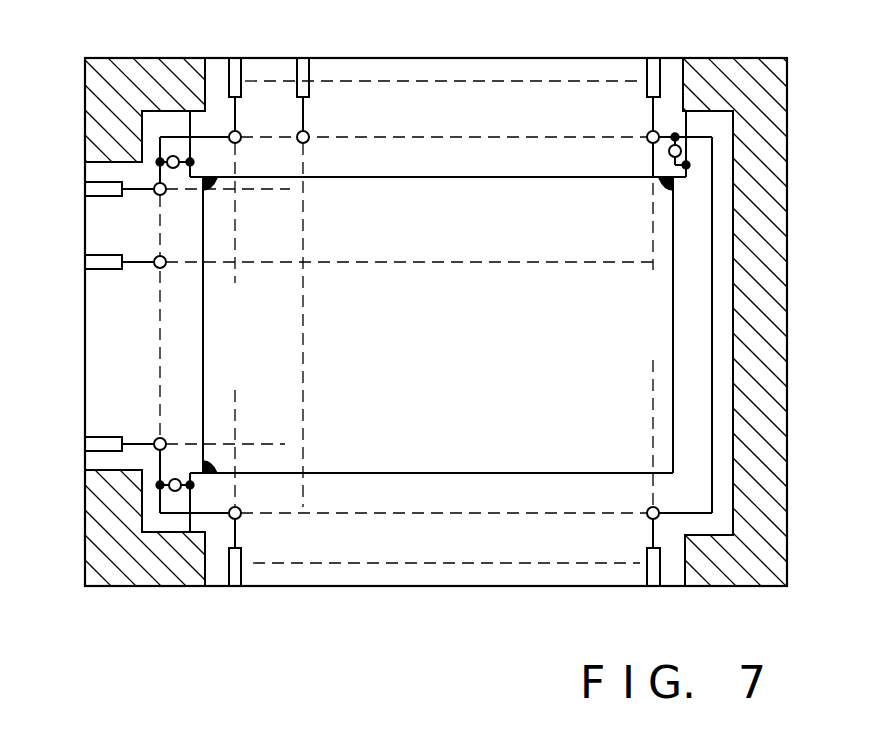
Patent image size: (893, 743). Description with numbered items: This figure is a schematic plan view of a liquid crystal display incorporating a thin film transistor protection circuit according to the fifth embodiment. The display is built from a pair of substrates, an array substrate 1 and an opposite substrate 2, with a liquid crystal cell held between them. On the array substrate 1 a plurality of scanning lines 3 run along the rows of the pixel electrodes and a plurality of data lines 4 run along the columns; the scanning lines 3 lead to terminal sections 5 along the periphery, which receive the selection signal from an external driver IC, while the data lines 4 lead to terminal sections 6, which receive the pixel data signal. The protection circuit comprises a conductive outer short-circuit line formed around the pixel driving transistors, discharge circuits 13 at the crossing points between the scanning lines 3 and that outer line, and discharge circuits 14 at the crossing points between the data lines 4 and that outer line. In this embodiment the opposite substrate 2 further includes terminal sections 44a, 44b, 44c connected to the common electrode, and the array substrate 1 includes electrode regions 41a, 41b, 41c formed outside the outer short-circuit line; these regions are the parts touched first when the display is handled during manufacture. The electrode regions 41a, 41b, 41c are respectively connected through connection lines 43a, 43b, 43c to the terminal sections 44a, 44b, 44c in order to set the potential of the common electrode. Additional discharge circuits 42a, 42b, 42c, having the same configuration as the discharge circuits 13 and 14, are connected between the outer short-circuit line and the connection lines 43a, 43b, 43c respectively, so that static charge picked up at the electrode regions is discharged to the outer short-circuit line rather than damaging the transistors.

The array substrate 1 is at (552, 58).
The opposite substrate 2 is at (405, 473).
The scanning lines 3 is at (176, 266).
The data lines 4 is at (240, 115).
The terminal sections 5 is at (86, 265).
The terminal sections 6 is at (303, 58).
The discharge circuits 13 is at (155, 256).
The discharge circuits 14 is at (310, 132).
The electrode region 41a is at (115, 78).
The electrode region 41b is at (100, 540).
The electrode region 41c is at (733, 70).
The discharge circuit 42a is at (176, 172).
The discharge circuit 42b is at (181, 478).
The discharge circuit 42c is at (670, 152).
The connection line 43a is at (190, 137).
The connection line 43b is at (189, 520).
The connection line 43c is at (698, 122).
The terminal section 44a is at (214, 180).
The terminal section 44b is at (217, 474).
The terminal section 44c is at (662, 186).